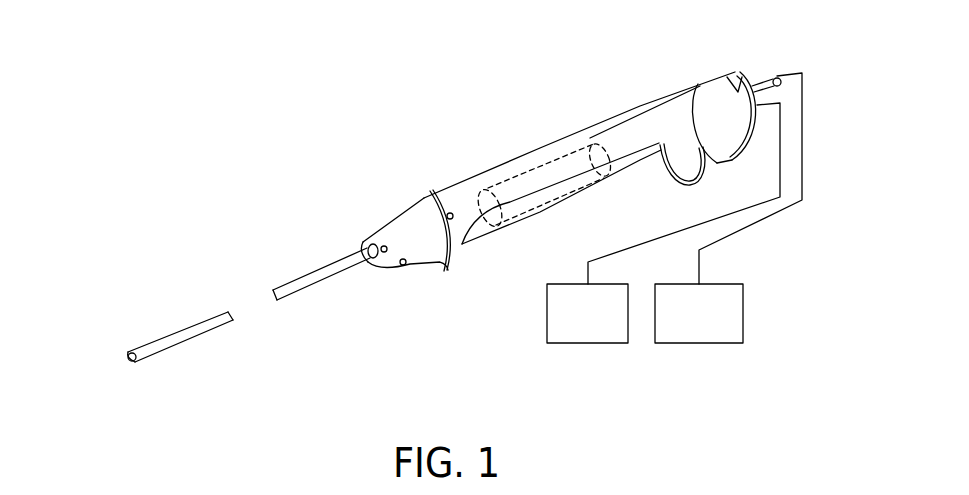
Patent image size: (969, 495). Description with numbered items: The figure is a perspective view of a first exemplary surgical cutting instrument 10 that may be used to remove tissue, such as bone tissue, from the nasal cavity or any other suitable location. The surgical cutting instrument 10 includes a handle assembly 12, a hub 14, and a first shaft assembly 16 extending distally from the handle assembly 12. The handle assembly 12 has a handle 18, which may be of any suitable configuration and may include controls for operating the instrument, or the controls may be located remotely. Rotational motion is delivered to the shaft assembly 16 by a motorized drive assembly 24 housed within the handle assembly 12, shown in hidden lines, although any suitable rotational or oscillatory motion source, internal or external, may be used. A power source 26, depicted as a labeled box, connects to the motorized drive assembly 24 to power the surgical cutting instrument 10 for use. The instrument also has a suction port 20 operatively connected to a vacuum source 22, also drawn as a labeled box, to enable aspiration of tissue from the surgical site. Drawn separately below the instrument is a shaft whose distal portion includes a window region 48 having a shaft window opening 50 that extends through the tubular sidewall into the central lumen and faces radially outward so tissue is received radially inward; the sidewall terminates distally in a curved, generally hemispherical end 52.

The surgical cutting instrument 10 is at (686, 32).
The handle assembly 12 is at (540, 148).
The hub 14 is at (393, 235).
The first shaft assembly 16 is at (305, 270).
The handle 18 is at (603, 190).
The suction port 20 is at (773, 77).
The vacuum source 22 is at (721, 284).
The motorized drive assembly 24 is at (532, 205).
The power source 26 is at (547, 309).
The window region 48 is at (138, 352).
The shaft window opening 50 is at (130, 353).
The generally hemispherical end 52 is at (127, 360).